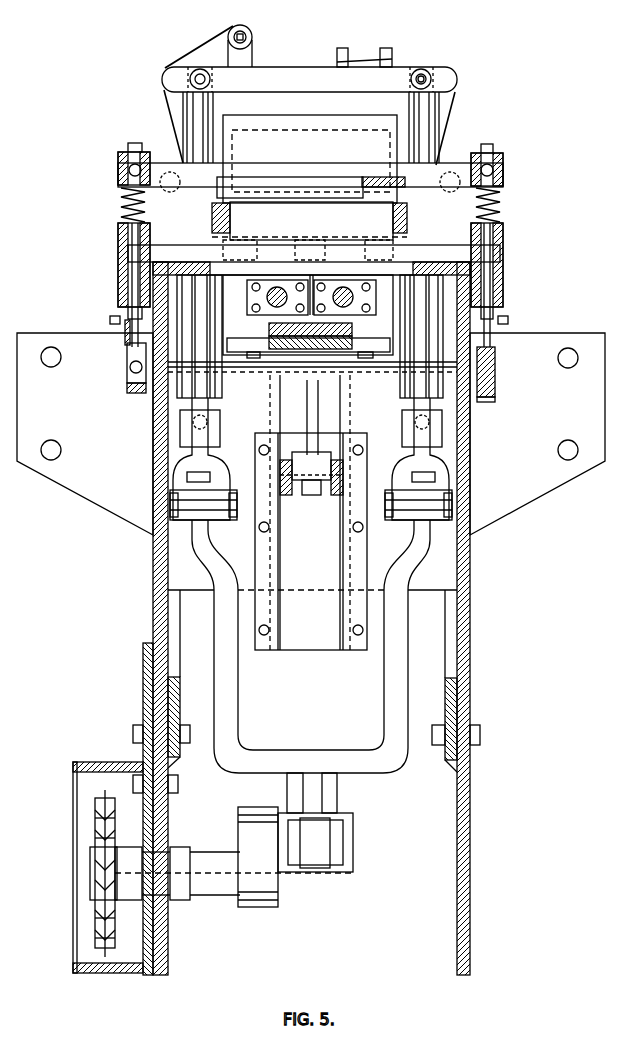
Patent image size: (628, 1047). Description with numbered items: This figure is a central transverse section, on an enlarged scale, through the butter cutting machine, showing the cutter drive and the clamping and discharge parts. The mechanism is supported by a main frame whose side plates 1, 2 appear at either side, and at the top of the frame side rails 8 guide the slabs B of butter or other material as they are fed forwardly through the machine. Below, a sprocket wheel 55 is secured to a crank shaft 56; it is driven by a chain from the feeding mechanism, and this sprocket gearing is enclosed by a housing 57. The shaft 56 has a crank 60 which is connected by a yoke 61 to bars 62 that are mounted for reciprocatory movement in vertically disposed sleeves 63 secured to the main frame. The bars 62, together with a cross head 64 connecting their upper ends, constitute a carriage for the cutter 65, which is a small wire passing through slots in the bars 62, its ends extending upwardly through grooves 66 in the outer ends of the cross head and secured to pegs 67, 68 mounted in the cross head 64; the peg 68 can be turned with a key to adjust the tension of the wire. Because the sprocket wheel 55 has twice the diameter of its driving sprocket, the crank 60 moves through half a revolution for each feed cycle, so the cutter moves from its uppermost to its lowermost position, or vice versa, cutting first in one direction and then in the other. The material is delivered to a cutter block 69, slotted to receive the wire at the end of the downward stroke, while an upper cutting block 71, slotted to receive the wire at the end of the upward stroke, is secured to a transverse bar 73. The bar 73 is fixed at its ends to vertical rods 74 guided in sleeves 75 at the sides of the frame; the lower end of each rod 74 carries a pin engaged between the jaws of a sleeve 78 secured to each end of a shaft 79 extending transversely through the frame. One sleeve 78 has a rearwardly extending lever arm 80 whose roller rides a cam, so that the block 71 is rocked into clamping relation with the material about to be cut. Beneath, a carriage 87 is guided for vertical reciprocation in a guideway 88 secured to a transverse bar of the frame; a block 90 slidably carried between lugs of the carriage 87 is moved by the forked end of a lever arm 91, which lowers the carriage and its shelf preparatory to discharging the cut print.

The side plate 1 is at (152, 571).
The side plate 2 is at (464, 564).
The side rails 8 is at (230, 223).
The sprocket wheel 55 is at (97, 917).
The crank shaft 56 is at (217, 890).
The housing 57 is at (102, 762).
The crank 60 is at (246, 833).
The yoke 61 is at (382, 767).
The bars 62 is at (213, 109).
The sleeves 63 is at (183, 297).
The cross head 64 is at (278, 73).
The cutter 65 is at (448, 133).
The grooves 66 is at (458, 80).
The peg 67 is at (347, 50).
The peg 68 is at (251, 38).
The cutter block 69 is at (284, 253).
The upper cutting block 71 is at (248, 190).
The transverse bar 73 is at (373, 172).
The vertical rods 74 is at (127, 147).
The sleeves 75 is at (120, 235).
The sleeve 78 is at (125, 378).
The shaft 79 is at (323, 372).
The lever arm 80 is at (497, 395).
The carriage 87 is at (322, 643).
The guideway 88 is at (348, 637).
The block 90 is at (303, 477).
The lever arm 91 is at (333, 490).
The slabs B is at (274, 210).